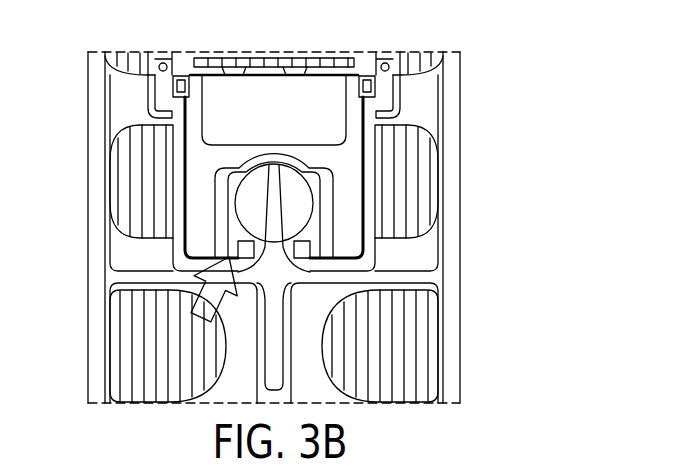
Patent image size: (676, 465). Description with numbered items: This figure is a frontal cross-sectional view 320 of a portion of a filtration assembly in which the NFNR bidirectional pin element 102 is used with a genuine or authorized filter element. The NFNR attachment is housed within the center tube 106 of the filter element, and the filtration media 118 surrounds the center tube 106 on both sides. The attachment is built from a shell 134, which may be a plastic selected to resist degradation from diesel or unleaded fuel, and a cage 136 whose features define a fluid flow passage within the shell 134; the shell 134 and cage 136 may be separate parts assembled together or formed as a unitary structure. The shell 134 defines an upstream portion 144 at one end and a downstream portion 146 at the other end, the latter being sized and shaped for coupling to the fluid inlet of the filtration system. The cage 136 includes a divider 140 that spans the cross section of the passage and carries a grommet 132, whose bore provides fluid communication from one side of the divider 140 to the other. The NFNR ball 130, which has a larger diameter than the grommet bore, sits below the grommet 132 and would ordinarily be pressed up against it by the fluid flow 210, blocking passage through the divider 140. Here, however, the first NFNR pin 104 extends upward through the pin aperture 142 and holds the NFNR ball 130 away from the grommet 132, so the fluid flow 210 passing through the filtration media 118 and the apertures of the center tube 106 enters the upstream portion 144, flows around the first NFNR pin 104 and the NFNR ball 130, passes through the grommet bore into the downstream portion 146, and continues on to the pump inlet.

The NFNR bidirectional pin element 102 is at (470, 286).
The first NFNR pin 104 is at (273, 183).
The center tube 106 is at (93, 382).
The filtration media 118 is at (117, 330).
The NFNR ball 130 is at (297, 213).
The grommet 132 is at (232, 183).
The shell 134 is at (226, 233).
The cage 136 is at (198, 163).
The divider 140 is at (330, 162).
The pin aperture 142 is at (297, 256).
The upstream portion 144 is at (236, 243).
The downstream portion 146 is at (270, 87).
The fluid flow 210 is at (200, 294).
The frontal cross-sectional view 320 is at (158, 43).